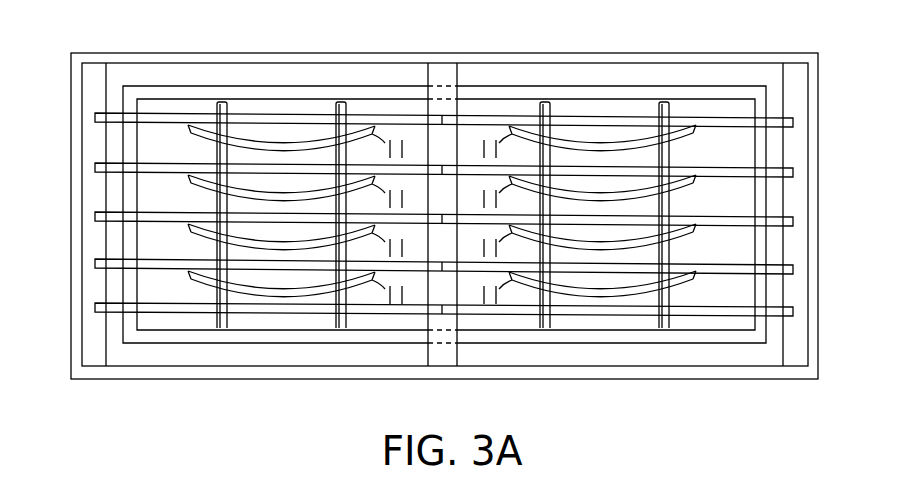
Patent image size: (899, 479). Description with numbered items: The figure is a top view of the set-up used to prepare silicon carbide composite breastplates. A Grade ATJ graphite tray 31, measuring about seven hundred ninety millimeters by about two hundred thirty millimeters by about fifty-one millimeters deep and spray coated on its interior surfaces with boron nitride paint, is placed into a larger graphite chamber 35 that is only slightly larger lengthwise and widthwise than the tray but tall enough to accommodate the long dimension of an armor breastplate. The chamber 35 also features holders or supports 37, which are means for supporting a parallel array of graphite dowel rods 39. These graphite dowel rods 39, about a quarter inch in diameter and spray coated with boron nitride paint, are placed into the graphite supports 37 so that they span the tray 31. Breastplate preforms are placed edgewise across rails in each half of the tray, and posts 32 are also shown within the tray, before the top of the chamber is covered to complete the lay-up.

The graphite tray 31 is at (178, 93).
The support post 32 is at (340, 101).
The graphite chamber 35 is at (707, 62).
The graphite holders or supports 37 is at (93, 79).
The graphite dowel rods 39 is at (95, 118).